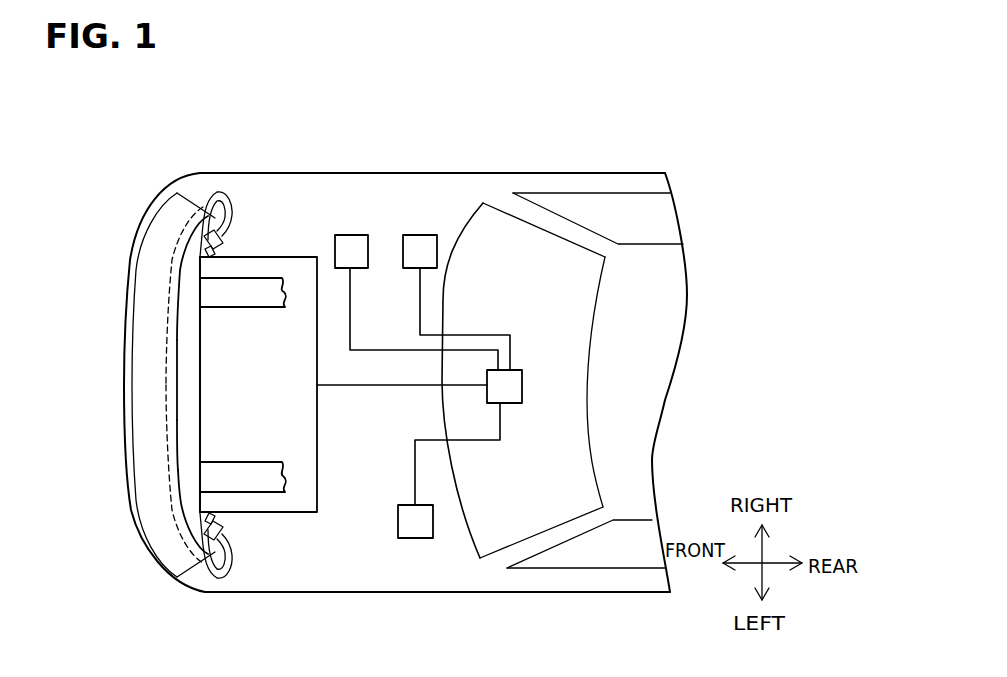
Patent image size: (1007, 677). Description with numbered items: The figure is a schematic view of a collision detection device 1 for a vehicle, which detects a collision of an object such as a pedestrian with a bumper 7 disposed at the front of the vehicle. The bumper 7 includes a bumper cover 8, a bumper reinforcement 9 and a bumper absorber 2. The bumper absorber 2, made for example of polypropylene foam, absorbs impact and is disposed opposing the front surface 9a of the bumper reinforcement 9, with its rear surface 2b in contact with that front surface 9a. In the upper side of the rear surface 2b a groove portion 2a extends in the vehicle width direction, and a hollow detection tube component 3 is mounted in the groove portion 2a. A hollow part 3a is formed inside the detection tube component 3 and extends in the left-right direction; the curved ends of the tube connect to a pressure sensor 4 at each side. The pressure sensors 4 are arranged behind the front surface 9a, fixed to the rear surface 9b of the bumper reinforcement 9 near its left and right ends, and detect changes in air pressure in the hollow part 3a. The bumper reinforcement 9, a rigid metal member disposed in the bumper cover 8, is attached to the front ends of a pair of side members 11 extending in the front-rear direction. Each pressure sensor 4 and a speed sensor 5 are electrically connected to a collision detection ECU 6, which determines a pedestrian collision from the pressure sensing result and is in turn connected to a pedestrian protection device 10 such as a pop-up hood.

The collision detection device 1 is at (562, 145).
The bumper absorber 2 is at (127, 317).
The groove portion 2a is at (177, 326).
The rear surface 2b is at (180, 382).
The detection tube component 3 is at (160, 363).
The hollow part 3a is at (165, 400).
The pressure sensor 4 is at (233, 250).
The speed sensor 5 is at (350, 235).
The collision detection ECU 6 is at (512, 403).
The bumper 7 is at (130, 250).
The bumper cover 8 is at (125, 283).
The bumper reinforcement 9 is at (173, 440).
The front surface 9a is at (173, 485).
The rear surface 9b is at (200, 423).
The pedestrian protection device 10 is at (418, 235).
The side members 11 is at (270, 278).